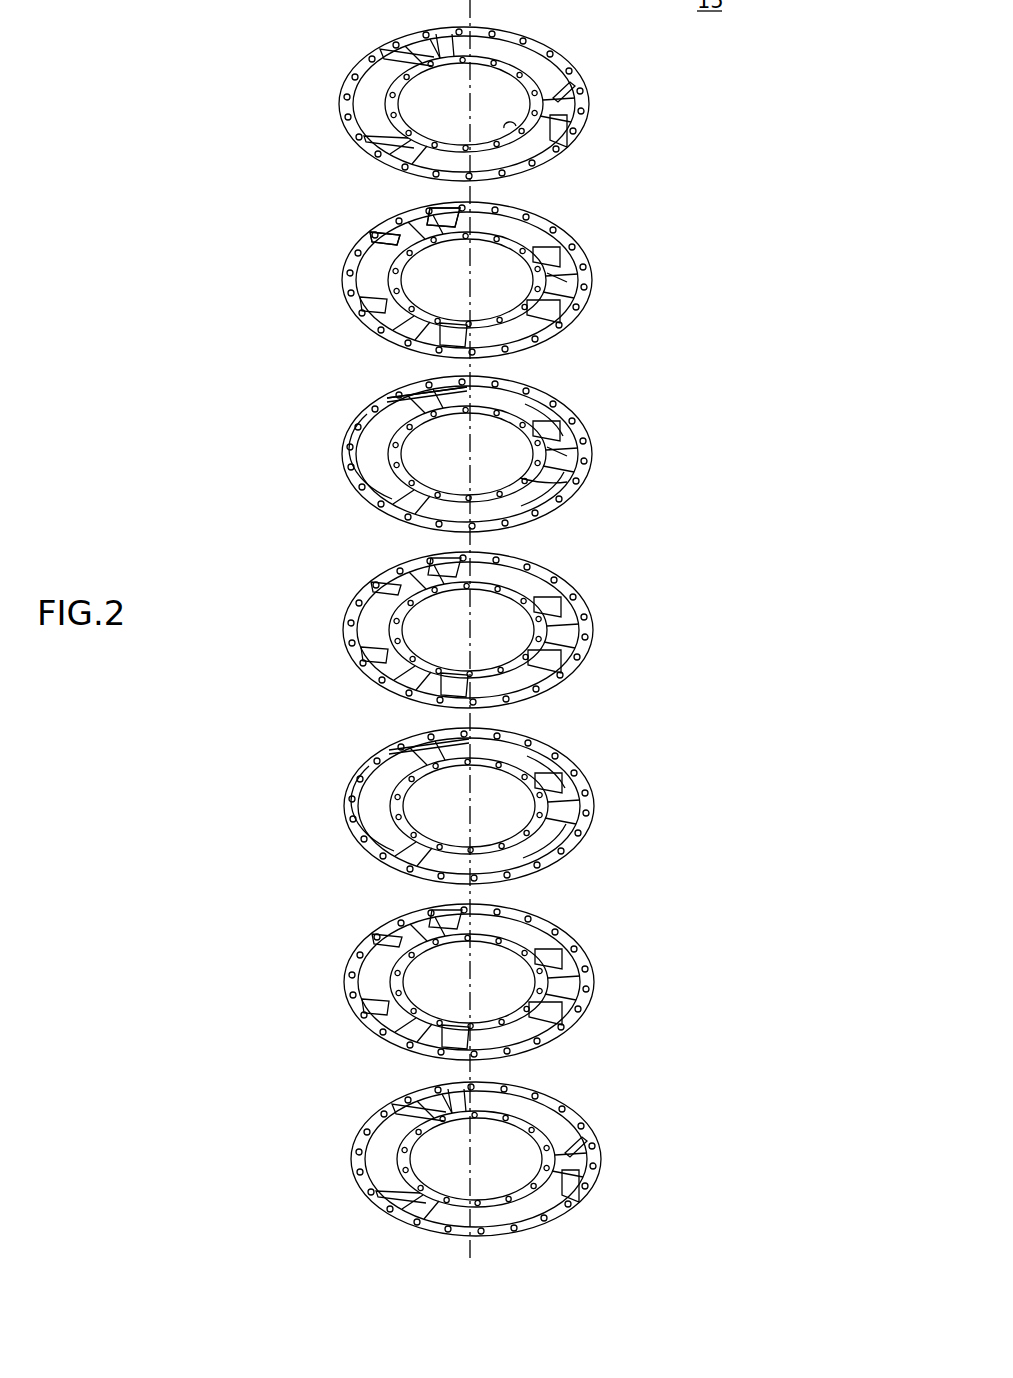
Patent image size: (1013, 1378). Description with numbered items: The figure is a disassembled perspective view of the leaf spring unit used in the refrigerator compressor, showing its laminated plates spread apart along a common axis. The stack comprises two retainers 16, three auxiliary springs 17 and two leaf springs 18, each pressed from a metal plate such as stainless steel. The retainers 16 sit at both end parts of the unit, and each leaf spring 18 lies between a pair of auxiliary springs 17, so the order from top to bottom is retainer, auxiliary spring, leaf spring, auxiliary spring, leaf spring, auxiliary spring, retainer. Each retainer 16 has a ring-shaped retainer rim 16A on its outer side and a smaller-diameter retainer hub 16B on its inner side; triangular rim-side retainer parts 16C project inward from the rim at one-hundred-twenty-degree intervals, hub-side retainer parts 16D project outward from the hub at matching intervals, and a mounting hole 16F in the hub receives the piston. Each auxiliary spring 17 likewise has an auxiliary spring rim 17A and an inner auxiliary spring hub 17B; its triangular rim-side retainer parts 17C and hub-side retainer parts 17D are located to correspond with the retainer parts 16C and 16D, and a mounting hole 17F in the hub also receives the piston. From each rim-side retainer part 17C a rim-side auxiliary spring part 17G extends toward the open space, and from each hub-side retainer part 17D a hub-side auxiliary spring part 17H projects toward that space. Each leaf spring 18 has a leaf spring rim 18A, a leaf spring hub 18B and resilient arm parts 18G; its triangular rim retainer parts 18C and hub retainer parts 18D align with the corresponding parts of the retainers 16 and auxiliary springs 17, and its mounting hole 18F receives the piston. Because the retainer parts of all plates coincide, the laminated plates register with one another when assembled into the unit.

The retainer 16 is at (310, 96).
The retainer rim 16A is at (547, 46).
The retainer hub 16B is at (522, 77).
The rim-side retainer part 16C is at (560, 118).
The hub-side retainer part 16D is at (568, 80).
The mounting hole 16F is at (530, 123).
The auxiliary spring 17 is at (311, 271).
The auxiliary spring rim 17A is at (547, 225).
The auxiliary spring hub 17B is at (528, 250).
The rim-side retainer part 17C is at (443, 222).
The hub-side retainer part 17D is at (560, 275).
The mounting hole 17F is at (402, 265).
The rim-side auxiliary spring part 17G is at (567, 323).
The hub-side auxiliary spring part 17H is at (580, 257).
The leaf spring 18 is at (311, 446).
The leaf spring rim 18A is at (547, 402).
The leaf spring hub 18B is at (527, 427).
The rim retainer part 18C is at (442, 397).
The hub retainer part 18D is at (562, 455).
The mounting hole 18F is at (537, 475).
The resilient arm part 18G is at (578, 432).